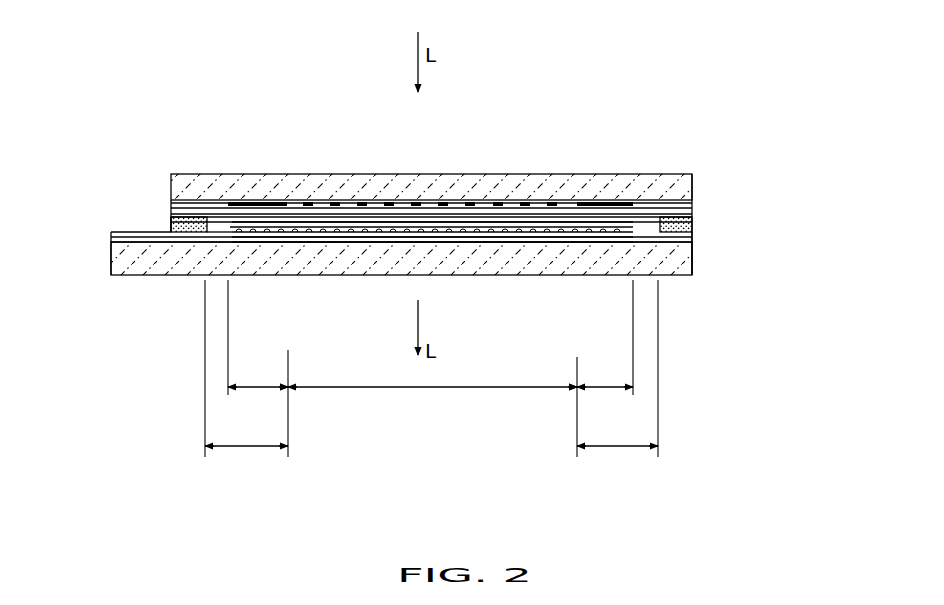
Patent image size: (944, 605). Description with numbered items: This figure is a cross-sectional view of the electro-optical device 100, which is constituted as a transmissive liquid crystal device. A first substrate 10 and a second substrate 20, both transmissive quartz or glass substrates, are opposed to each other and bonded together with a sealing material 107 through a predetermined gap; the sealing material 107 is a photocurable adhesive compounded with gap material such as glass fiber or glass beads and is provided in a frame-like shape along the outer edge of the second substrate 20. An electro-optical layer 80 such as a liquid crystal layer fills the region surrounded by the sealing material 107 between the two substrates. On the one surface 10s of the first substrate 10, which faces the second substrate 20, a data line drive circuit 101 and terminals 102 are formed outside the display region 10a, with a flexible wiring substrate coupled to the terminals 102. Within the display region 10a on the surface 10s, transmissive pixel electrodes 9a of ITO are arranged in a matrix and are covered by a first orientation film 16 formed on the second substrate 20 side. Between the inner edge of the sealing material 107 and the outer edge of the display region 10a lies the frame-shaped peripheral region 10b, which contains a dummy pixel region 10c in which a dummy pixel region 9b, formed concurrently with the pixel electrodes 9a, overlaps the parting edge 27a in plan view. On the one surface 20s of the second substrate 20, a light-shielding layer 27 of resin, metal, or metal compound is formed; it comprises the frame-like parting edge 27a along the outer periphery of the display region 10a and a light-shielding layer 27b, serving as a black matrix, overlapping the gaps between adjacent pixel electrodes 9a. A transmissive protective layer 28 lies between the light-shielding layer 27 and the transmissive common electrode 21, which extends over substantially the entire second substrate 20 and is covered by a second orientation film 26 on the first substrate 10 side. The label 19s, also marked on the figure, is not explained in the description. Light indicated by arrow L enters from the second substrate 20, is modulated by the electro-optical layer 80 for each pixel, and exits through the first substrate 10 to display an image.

The electro-optical device 100 is at (661, 80).
The first substrate 10 is at (690, 262).
The display region 10a is at (432, 404).
The peripheral region 10b is at (431, 463).
The dummy pixel region 10c is at (251, 391).
The one surface of first substrate 10s is at (657, 242).
The second substrate 20 is at (657, 174).
The one surface of second substrate 20s is at (643, 200).
The common electrode 21 is at (462, 203).
The second orientation film 26 is at (512, 218).
The light-shielding layer 27 is at (336, 200).
The parting edge 27a is at (245, 138).
The light-shielding layer (black matrix) 27b is at (418, 160).
The protective layer 28 is at (350, 198).
The side surface of layer 19s is at (220, 237).
The pixel electrode 9a is at (430, 240).
The dummy pixel region 9b is at (247, 238).
The first orientation film 16 is at (363, 240).
The electro-optical layer 80 is at (535, 225).
The data line drive circuit 101 is at (167, 236).
The terminals 102 is at (111, 231).
The sealing material 107 is at (683, 225).